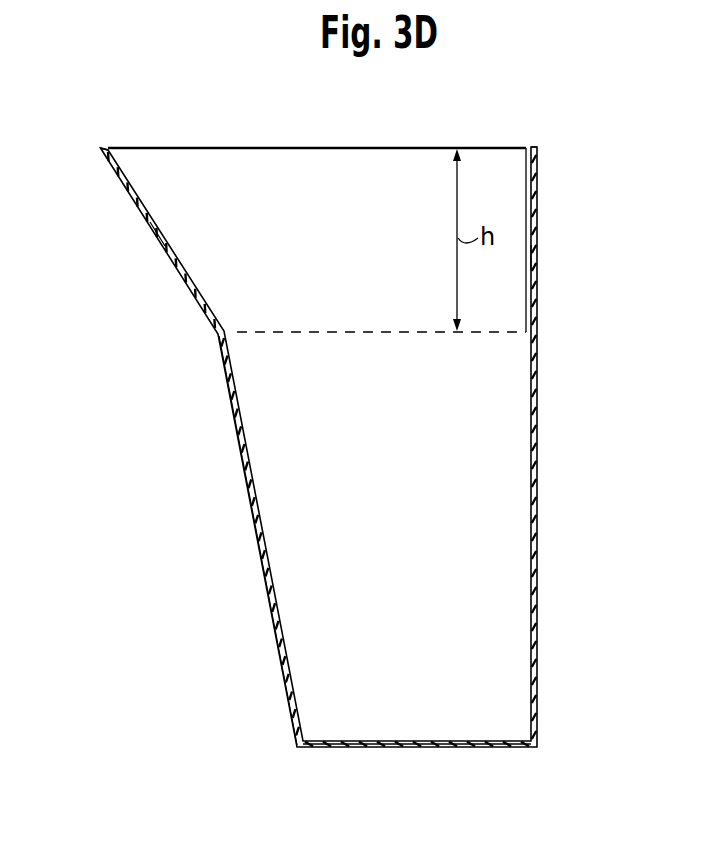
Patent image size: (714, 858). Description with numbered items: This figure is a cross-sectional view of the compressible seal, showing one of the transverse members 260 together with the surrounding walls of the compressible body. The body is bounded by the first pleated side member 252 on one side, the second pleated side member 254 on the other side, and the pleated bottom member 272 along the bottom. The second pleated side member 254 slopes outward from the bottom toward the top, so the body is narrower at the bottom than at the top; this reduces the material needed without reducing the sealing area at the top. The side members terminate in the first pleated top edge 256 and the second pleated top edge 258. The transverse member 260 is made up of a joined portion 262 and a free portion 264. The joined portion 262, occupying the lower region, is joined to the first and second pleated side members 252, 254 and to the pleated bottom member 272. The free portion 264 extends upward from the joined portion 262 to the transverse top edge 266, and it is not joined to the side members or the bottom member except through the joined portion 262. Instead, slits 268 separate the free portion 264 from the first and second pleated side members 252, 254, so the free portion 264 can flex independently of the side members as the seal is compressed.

The first pleated side member 252 is at (537, 387).
The second pleated side member 254 is at (247, 494).
The first pleated top edge 256 is at (537, 147).
The second pleated top edge 258 is at (102, 147).
The transverse member 260 is at (492, 543).
The joined portion 262 is at (400, 538).
The free portion 264 is at (388, 271).
The transverse top edge 266 is at (355, 147).
The slit 268 is at (158, 239).
The pleated bottom member 272 is at (437, 747).